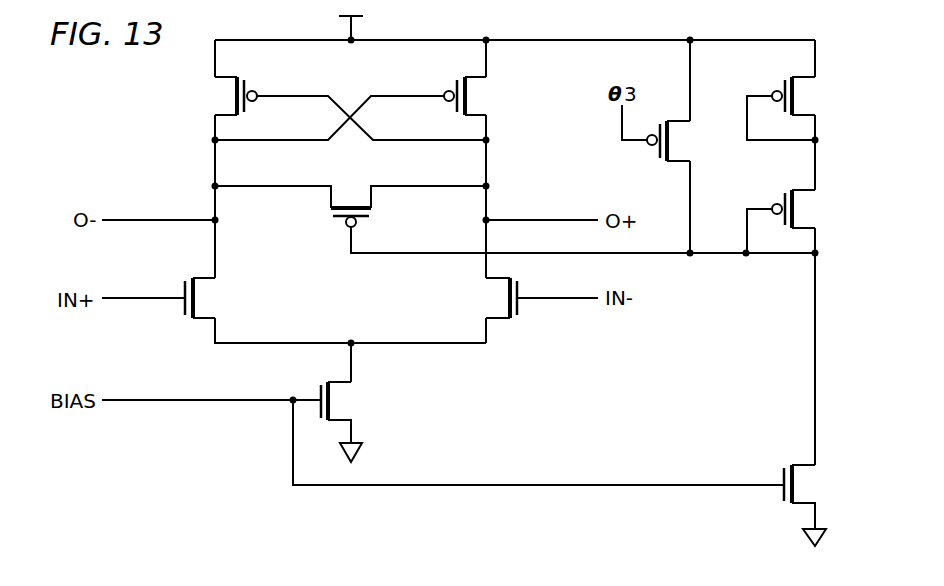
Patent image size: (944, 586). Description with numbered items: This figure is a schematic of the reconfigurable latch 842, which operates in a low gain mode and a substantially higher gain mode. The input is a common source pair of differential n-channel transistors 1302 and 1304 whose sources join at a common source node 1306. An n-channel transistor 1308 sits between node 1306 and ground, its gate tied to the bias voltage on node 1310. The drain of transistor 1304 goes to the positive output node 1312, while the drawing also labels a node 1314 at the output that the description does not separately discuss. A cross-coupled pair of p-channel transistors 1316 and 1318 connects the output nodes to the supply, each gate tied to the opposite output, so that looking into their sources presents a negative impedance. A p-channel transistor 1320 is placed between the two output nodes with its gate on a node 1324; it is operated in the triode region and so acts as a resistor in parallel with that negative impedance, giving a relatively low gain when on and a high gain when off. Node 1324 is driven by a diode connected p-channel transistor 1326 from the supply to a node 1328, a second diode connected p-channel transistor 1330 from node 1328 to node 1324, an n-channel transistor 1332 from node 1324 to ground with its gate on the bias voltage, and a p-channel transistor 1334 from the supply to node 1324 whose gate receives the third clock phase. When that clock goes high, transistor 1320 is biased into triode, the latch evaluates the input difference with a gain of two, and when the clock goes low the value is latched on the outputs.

The reconfigurable latch 842 is at (104, 110).
The differential input n-channel transistor 1302 is at (185, 310).
The differential input n-channel transistor 1304 is at (517, 310).
The common source node 1306 is at (356, 348).
The n-channel transistor 1308 is at (170, 403).
The bias voltage node 1310 is at (320, 388).
The positive output node 1312 is at (160, 218).
The positive output node 1314 is at (513, 218).
The cross-coupled p-channel transistor 1316 is at (245, 86).
The cross-coupled p-channel transistor 1318 is at (456, 86).
The p-channel transistor 1320 is at (340, 223).
The node 1324 is at (692, 255).
The diode connected p-channel transistor 1326 is at (785, 84).
The node 1328 is at (816, 142).
The second diode connected p-channel transistor 1330 is at (785, 196).
The n-channel transistor 1332 is at (784, 497).
The p-channel transistor 1334 is at (660, 152).